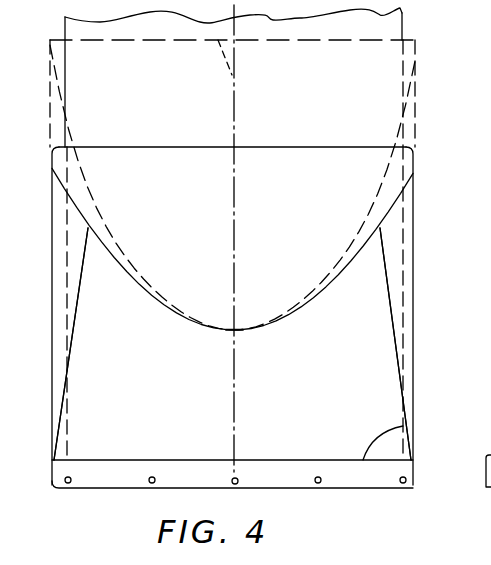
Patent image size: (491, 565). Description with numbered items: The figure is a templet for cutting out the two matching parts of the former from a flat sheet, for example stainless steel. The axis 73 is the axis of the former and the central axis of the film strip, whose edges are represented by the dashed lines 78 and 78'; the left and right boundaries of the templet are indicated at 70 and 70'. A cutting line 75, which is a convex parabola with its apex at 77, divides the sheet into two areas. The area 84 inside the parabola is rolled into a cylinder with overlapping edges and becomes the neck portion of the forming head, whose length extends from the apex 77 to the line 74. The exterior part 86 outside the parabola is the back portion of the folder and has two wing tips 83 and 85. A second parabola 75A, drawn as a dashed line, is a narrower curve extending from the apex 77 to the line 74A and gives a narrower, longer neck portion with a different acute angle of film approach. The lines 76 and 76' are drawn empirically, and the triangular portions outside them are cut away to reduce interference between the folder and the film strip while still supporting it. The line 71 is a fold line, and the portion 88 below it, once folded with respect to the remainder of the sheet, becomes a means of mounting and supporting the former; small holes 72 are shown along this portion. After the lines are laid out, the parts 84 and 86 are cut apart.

The pocket holder left side 70 is at (32, 316).
The pocket holder right side 70' is at (442, 316).
The fold line 71 is at (403, 424).
The mounting holes 72 is at (321, 483).
The axis 73 is at (234, 420).
The line 74 is at (268, 147).
The line 74A is at (244, 64).
The cutting line 75 is at (317, 300).
The second parabola 75A is at (357, 233).
The line 76 is at (84, 344).
The line 76' is at (373, 344).
The apex 77 is at (233, 327).
The dashed line 78 is at (37, 303).
The dashed line 78' is at (434, 250).
The wing tip 83 is at (95, 262).
The area 84 is at (187, 192).
The wing tip 85 is at (367, 270).
The back portion 86 is at (171, 382).
The portion 88 is at (200, 483).